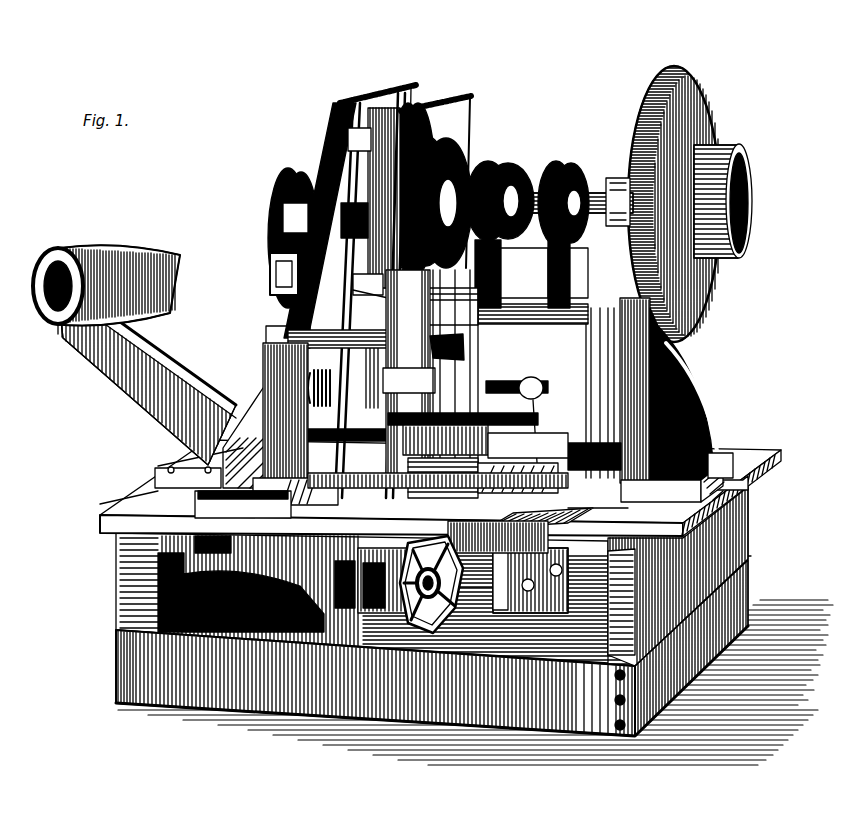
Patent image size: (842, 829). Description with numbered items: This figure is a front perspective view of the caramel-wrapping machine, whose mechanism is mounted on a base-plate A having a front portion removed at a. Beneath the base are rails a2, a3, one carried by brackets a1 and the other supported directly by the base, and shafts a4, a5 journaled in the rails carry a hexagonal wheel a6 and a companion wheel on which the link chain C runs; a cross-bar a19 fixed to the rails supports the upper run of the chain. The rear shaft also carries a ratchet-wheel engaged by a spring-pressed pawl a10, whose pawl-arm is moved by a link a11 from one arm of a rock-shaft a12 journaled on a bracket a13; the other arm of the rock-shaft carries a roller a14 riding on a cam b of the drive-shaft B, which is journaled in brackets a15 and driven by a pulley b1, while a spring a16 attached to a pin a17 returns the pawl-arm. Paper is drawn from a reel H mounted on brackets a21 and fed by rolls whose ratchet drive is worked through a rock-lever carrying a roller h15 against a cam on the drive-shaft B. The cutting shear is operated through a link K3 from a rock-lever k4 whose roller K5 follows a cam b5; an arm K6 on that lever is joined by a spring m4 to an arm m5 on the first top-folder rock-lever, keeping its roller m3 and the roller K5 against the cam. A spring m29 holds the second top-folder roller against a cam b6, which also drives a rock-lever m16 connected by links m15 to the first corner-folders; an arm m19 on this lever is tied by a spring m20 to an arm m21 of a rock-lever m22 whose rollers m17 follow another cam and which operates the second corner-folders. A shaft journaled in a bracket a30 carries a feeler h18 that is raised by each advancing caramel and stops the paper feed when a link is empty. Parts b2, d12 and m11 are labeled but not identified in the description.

The base-plate A is at (757, 443).
The removed portion a is at (585, 492).
The brackets a1 is at (241, 551).
The rail a2 is at (327, 562).
The rail a3 is at (490, 613).
The shaft a4 is at (428, 598).
The rear shaft a5 is at (506, 560).
The hexagonal wheel a6 is at (494, 252).
The spring-pressed pawl a10 is at (600, 336).
The link a11 is at (663, 407).
The rock-shaft a12 is at (660, 346).
The bracket a13 is at (640, 318).
The roller a14 is at (566, 260).
The brackets a15 is at (690, 360).
The spring a16 is at (693, 378).
The pin a17 is at (498, 364).
The cross-bar a19 is at (742, 528).
The brackets a21 is at (162, 345).
The bracket a30 is at (213, 437).
The drive-shaft B is at (540, 153).
The cam b is at (560, 160).
The shaft disk b2 is at (495, 172).
The cam b5 is at (447, 167).
The cam b6 is at (680, 63).
The pulley b1 is at (720, 135).
The chain C is at (385, 642).
The foot plate d12 is at (740, 478).
The reel H is at (70, 258).
The roller h15 is at (262, 254).
The feeler h18 is at (480, 447).
The link K3 is at (267, 373).
The roller K5 is at (417, 227).
The arm K6 is at (403, 82).
The rock-lever k4 is at (373, 283).
The roller m3 is at (465, 128).
The spring m4 is at (412, 98).
The arm m5 is at (463, 103).
The bracket m11 is at (458, 341).
The links m15 is at (193, 491).
The rock-lever m16 is at (280, 315).
The rollers m17 is at (332, 153).
The arm m19 is at (405, 88).
The spring m20 is at (350, 96).
The arm m21 is at (332, 118).
The rock-lever m22 is at (300, 213).
The spring m29 is at (367, 283).